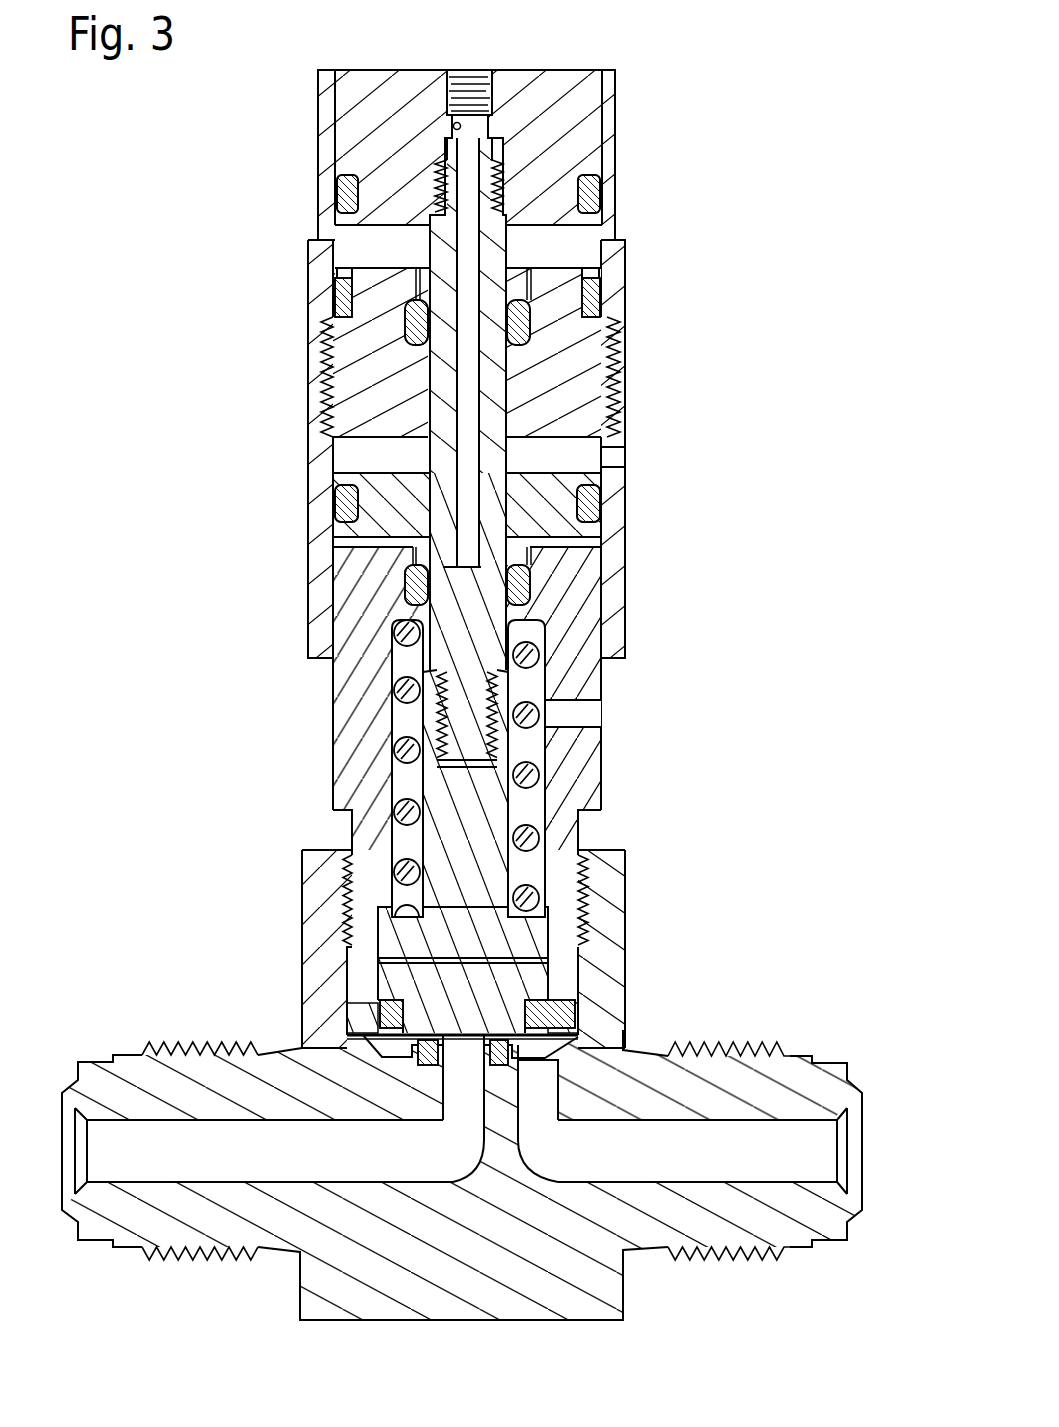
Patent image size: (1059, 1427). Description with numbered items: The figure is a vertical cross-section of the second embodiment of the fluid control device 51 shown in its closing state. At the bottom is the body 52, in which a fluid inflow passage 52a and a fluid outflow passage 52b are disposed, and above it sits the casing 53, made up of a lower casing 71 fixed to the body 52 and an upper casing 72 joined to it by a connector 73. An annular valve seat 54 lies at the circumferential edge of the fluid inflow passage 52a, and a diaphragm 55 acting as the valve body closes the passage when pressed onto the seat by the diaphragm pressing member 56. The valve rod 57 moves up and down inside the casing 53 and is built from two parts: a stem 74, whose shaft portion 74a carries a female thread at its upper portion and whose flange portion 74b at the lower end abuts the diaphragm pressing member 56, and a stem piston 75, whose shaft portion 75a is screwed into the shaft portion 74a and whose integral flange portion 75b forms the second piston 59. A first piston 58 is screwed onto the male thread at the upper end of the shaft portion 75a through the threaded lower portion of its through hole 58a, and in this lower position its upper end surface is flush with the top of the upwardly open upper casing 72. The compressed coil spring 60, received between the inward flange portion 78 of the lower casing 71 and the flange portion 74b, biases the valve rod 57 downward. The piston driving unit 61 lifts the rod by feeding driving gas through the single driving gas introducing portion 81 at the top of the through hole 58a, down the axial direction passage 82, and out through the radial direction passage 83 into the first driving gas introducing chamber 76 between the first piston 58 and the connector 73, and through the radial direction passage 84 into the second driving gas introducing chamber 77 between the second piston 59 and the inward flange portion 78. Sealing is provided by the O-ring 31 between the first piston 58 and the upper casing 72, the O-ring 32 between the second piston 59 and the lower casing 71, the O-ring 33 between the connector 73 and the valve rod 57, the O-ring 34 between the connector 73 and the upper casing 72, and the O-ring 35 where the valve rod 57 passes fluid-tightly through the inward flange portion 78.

The O-ring 31 is at (343, 195).
The O-ring 32 is at (343, 500).
The O-ring 33 is at (529, 325).
The O-ring 34 is at (603, 284).
The O-ring 35 is at (533, 583).
The fluid control device 51 is at (640, 412).
The body 52 is at (623, 1292).
The fluid inflow passage 52a is at (150, 1173).
The fluid outflow passage 52b is at (745, 1173).
The casing 53 is at (626, 633).
The annular valve seat 54 is at (430, 1060).
The diaphragm 55 is at (530, 1038).
The diaphragm pressing member 56 is at (533, 983).
The valve rod 57 is at (482, 823).
The first piston 58 is at (573, 134).
The through hole 58a is at (453, 127).
The second piston 59 is at (545, 496).
The compressed coil spring 60 is at (548, 712).
The piston driving unit 61 is at (496, 70).
The lower casing 71 is at (352, 762).
The upper casing 72 is at (418, 274).
The connector 73 is at (363, 368).
The stem 74 is at (450, 888).
The shaft portion 74a is at (450, 813).
The flange portion 74b is at (395, 937).
The stem piston 75 is at (447, 665).
The shaft portion 75a is at (447, 393).
The flange portion 75b is at (392, 518).
The first driving gas introducing chamber 76 is at (573, 245).
The second driving gas introducing chamber 77 is at (585, 543).
The inward flange portion 78 is at (392, 592).
The driving gas introducing portion 81 is at (460, 70).
The axial direction passage 82 is at (455, 237).
The radial direction passage 83 is at (324, 328).
The radial direction passage 84 is at (405, 583).